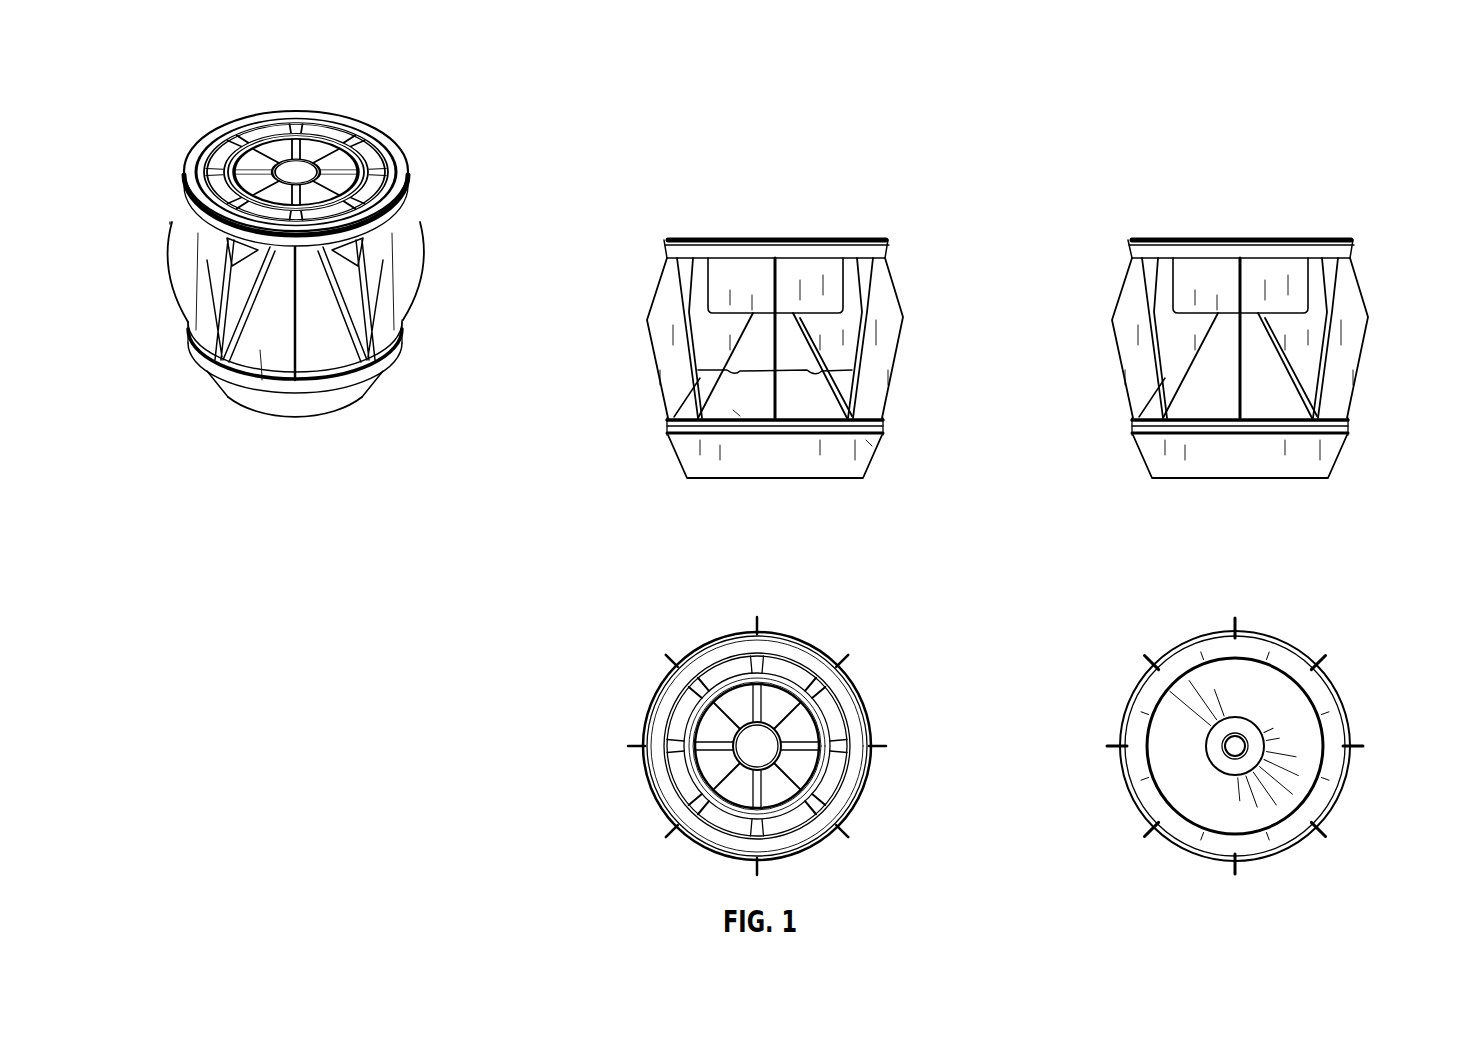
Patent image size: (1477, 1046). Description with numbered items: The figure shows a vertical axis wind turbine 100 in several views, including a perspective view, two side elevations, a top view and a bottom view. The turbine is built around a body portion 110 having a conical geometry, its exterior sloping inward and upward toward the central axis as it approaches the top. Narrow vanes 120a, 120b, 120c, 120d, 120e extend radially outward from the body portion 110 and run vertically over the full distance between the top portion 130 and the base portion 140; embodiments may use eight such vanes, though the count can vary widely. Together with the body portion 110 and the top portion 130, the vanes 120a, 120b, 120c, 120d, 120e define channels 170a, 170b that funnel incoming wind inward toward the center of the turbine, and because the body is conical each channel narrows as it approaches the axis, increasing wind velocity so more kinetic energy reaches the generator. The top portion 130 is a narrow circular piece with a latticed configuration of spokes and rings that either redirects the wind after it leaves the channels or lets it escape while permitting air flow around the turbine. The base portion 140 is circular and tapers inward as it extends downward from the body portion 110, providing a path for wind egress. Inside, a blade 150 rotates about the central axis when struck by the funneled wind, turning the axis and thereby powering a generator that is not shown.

The vertical axis wind turbine 100 is at (190, 104).
The body portion 110 is at (333, 345).
The vane 120a is at (290, 352).
The vane 120b is at (373, 317).
The vane 120c is at (413, 253).
The vane 120d is at (213, 337).
The vane 120e is at (177, 270).
The top portion 130 is at (378, 142).
The base portion 140 is at (335, 400).
The blade 150 is at (1288, 300).
The channel 170a is at (737, 413).
The channel 170b is at (870, 442).